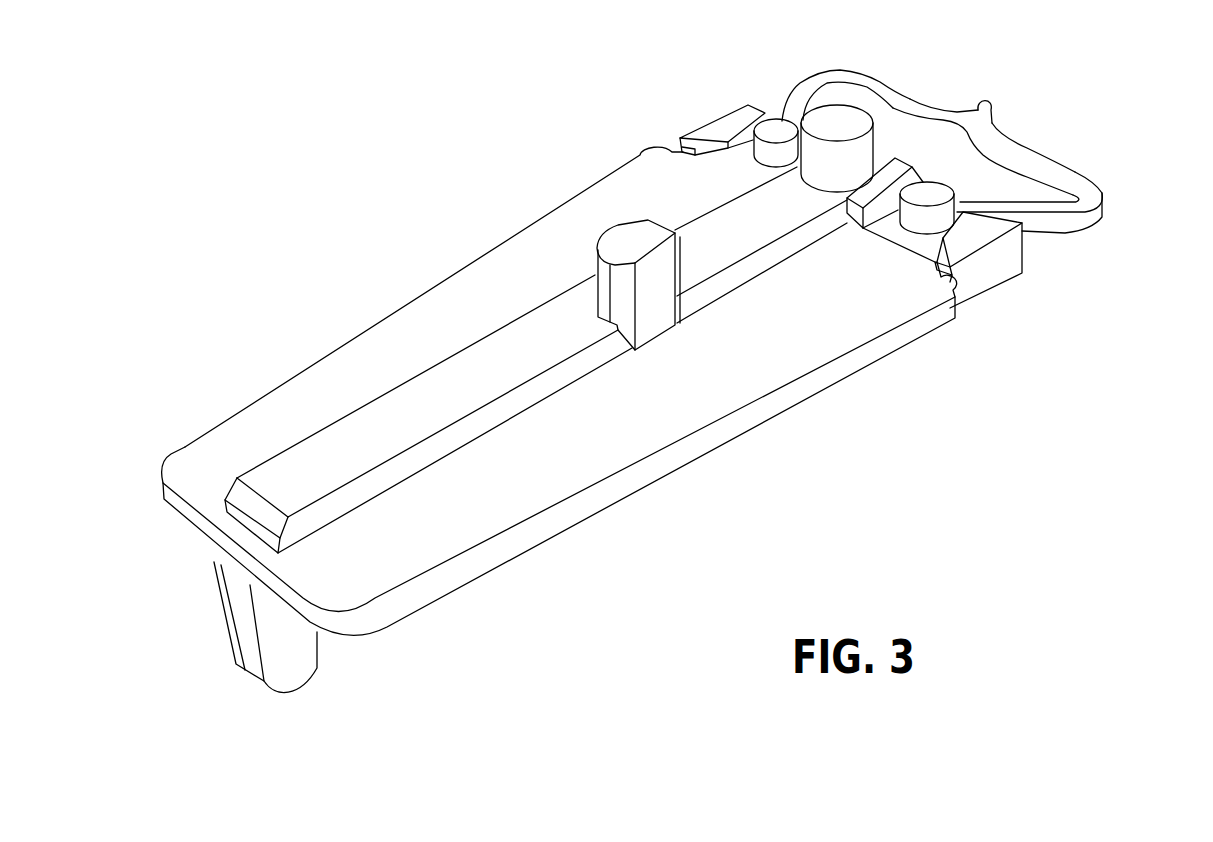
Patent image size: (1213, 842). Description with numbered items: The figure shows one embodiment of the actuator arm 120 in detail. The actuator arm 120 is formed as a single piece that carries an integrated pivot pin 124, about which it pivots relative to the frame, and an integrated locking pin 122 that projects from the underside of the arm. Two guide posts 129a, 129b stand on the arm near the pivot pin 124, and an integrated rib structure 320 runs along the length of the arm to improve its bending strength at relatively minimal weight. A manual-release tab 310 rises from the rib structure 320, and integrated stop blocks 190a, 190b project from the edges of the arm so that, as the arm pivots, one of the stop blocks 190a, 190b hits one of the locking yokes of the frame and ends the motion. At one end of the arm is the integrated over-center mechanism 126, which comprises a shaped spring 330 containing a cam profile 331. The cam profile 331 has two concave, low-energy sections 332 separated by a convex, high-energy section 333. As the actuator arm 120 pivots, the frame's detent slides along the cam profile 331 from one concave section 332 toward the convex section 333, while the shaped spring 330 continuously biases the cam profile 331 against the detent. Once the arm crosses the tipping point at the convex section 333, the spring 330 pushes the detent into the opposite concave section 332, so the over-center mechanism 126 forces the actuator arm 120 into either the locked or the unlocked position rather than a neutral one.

The actuator arm 120 is at (376, 199).
The integrated locking pin 122 is at (298, 652).
The integrated pivot pin 124 is at (833, 118).
The over-center mechanism 126 is at (1102, 186).
The guide post 129a is at (776, 128).
The guide post 129b is at (957, 212).
The integrated stop block 190a is at (716, 128).
The integrated stop block 190b is at (983, 272).
The manual-release tab 310 is at (648, 323).
The integrated rib structure 320 is at (820, 354).
The shaped spring 330 is at (1070, 156).
The cam profile 331 is at (900, 86).
The concave section 332 is at (925, 107).
The convex section 333 is at (981, 106).